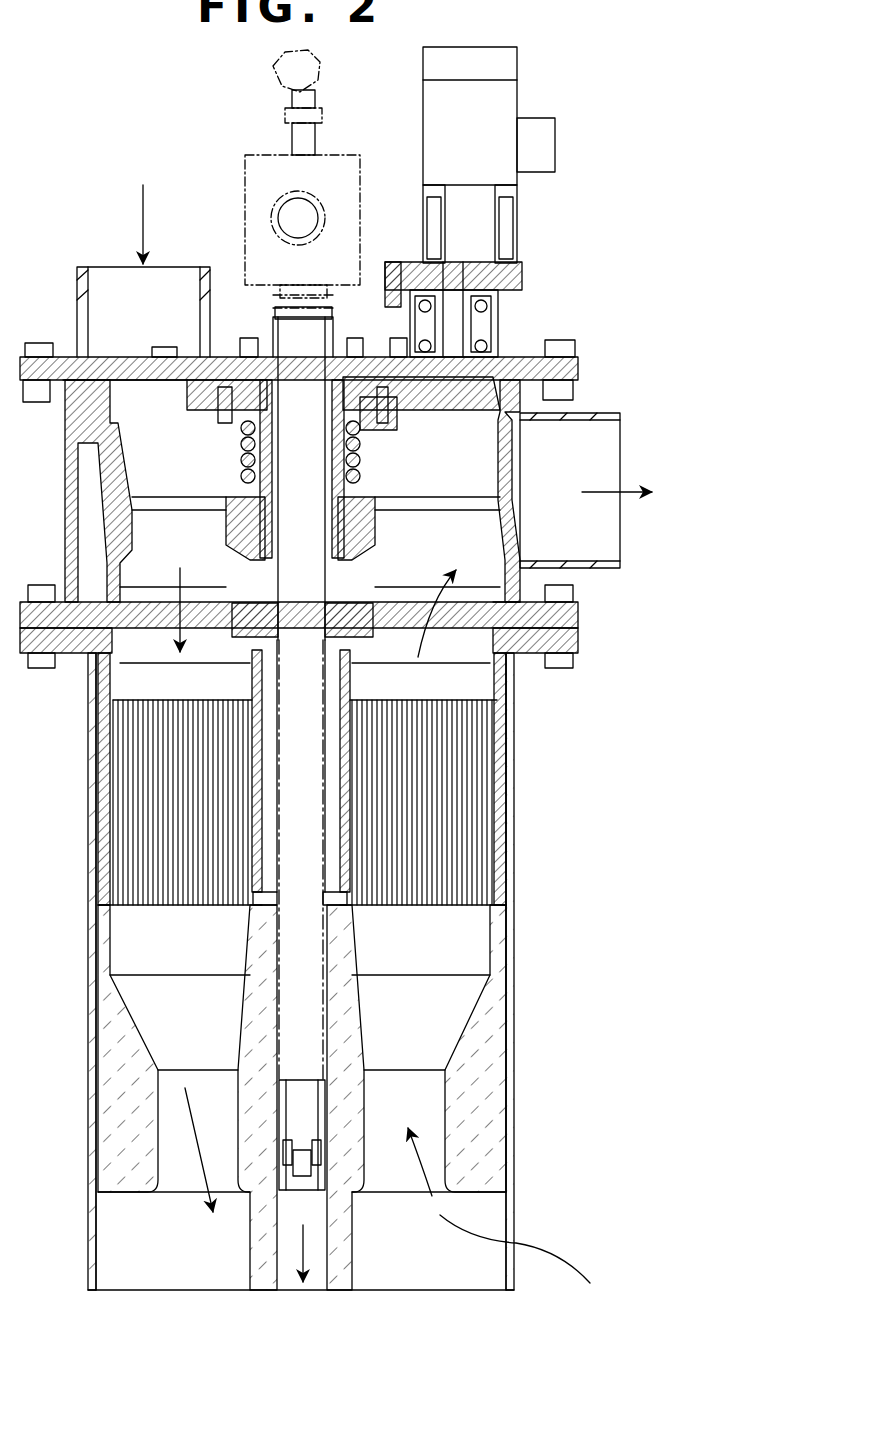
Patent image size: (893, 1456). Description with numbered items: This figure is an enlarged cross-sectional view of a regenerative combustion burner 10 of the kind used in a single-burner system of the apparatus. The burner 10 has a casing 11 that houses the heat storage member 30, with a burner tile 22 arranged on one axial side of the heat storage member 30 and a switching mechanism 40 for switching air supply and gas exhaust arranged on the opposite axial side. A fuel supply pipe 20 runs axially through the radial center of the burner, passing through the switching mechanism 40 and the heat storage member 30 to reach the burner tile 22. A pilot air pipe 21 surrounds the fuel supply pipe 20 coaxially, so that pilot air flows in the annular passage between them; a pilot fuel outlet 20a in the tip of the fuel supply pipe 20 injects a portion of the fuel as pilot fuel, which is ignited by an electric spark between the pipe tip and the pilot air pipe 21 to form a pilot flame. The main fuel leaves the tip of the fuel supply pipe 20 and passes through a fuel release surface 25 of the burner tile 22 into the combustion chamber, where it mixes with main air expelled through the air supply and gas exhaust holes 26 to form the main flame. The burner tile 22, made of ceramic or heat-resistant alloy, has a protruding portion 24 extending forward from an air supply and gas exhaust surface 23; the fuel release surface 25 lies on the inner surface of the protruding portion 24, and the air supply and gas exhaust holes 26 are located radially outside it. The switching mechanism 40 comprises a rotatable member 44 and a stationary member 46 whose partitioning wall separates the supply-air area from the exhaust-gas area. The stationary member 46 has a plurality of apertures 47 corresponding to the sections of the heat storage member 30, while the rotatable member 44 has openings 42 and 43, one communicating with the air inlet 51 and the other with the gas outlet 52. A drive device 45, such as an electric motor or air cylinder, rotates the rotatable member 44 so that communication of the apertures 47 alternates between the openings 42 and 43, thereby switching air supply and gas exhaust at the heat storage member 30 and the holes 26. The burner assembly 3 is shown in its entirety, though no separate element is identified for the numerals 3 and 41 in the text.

The heat exchanger 3 is at (528, 833).
The regenerative combustion burner 10 is at (510, 1030).
The casing 11 is at (510, 965).
The fuel supply pipe 20 is at (310, 1107).
The pilot fuel outlet 20a is at (318, 1177).
The pilot air pipe 21 is at (310, 940).
The burner tile 22 is at (108, 1128).
The air supply and gas exhaust surface 23 is at (505, 1215).
The protruding portion 24 is at (250, 1223).
The fuel release surface 25 is at (268, 1290).
The air supply and gas exhaust hole 26 is at (165, 1105).
The heat storage member 30 is at (455, 785).
The switching mechanism 40 is at (118, 515).
The left seal ring 41 is at (250, 532).
The opening 42 is at (201, 601).
The opening 43 is at (467, 593).
The rotatable member 44 is at (370, 583).
The drive device 45 is at (517, 100).
The stationary member 46 is at (360, 623).
The aperture 47 is at (240, 617).
The air inlet 51 is at (100, 293).
The gas outlet 52 is at (590, 437).